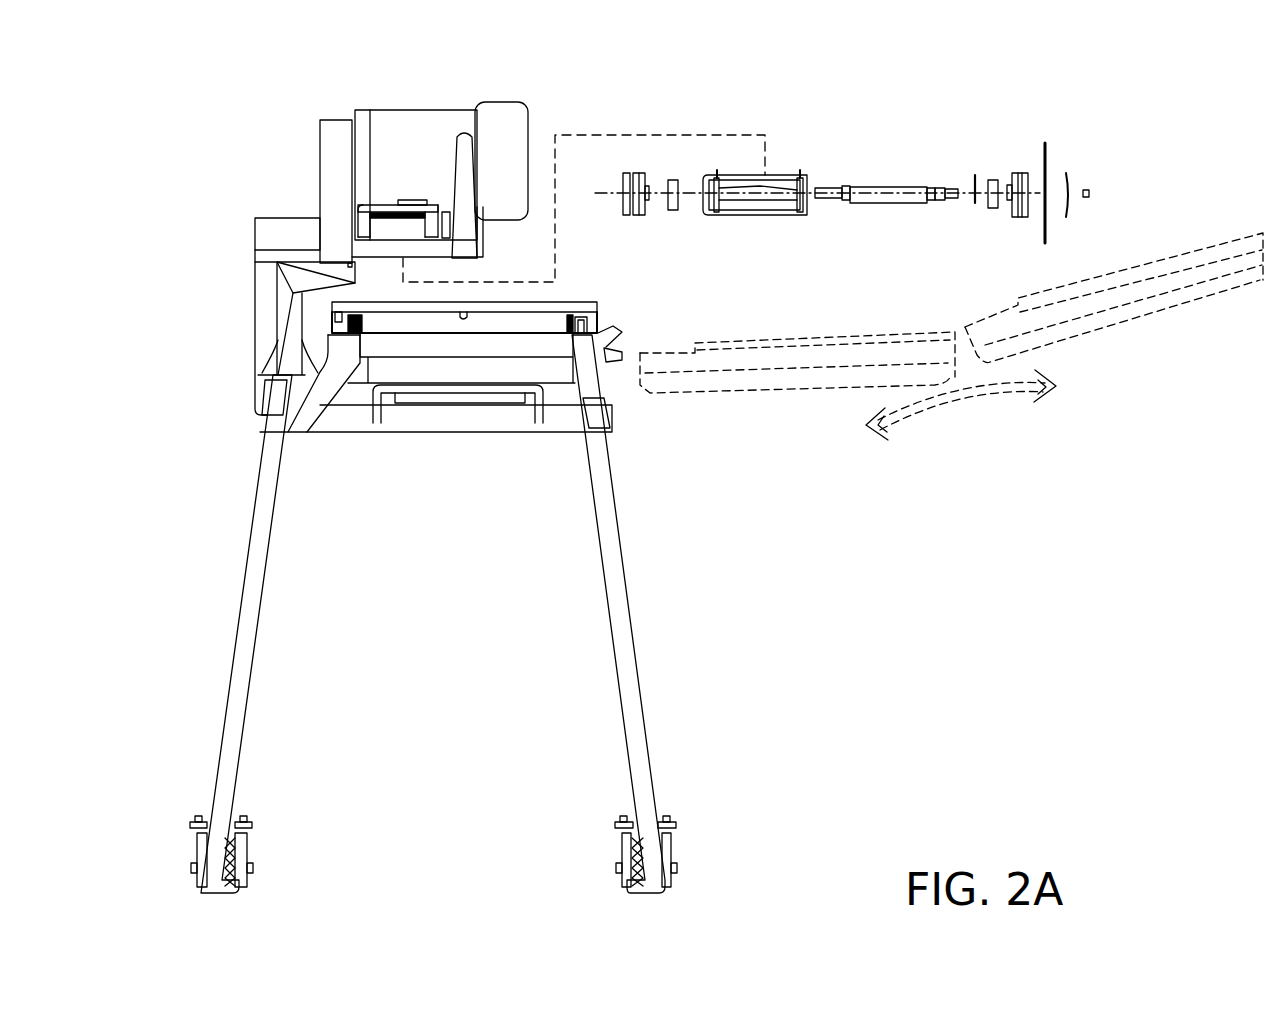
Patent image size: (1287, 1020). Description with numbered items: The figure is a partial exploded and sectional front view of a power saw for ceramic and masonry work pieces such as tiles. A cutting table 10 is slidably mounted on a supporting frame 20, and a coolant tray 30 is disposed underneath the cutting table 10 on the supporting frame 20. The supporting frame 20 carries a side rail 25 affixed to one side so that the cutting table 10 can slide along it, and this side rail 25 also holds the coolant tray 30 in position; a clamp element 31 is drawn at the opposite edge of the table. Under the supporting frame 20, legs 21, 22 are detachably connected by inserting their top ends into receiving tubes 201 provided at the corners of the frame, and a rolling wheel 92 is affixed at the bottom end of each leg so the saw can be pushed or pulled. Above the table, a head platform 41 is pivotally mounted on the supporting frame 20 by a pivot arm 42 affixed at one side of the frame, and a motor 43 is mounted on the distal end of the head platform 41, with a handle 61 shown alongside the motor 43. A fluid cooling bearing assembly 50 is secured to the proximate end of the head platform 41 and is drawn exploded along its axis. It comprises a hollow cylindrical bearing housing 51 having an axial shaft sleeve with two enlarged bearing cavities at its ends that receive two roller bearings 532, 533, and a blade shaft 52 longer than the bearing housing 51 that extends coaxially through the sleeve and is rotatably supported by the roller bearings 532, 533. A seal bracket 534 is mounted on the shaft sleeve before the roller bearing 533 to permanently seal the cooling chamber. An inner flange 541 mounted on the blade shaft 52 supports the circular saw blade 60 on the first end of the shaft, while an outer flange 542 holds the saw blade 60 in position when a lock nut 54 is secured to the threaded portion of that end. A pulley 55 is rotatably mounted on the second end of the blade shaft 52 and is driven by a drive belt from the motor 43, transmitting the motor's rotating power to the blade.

The cutting table 10 is at (512, 322).
The supporting frame 20 is at (418, 418).
The leg 21 is at (247, 657).
The leg 22 is at (625, 612).
The side rail 25 is at (310, 418).
The receiving tube 201 is at (268, 375).
The coolant tray 30 is at (510, 372).
The table clamp 31 is at (623, 332).
The head platform 41 is at (393, 233).
The pivot arm 42 is at (265, 290).
The motor 43 is at (500, 172).
The fluid cooling bearing assembly 50 is at (778, 175).
The bearing housing 51 is at (777, 218).
The blade shaft 52 is at (878, 190).
The lock nut 54 is at (1090, 196).
The pulley 55 is at (630, 172).
The circular saw blade 60 is at (1047, 142).
The handle 61 is at (467, 157).
The rolling wheel 92 is at (612, 820).
The roller bearing 532 is at (675, 178).
The roller bearing 533 is at (993, 203).
The seal bracket 534 is at (975, 178).
The inner flange 541 is at (1013, 215).
The outer flange 542 is at (1068, 176).